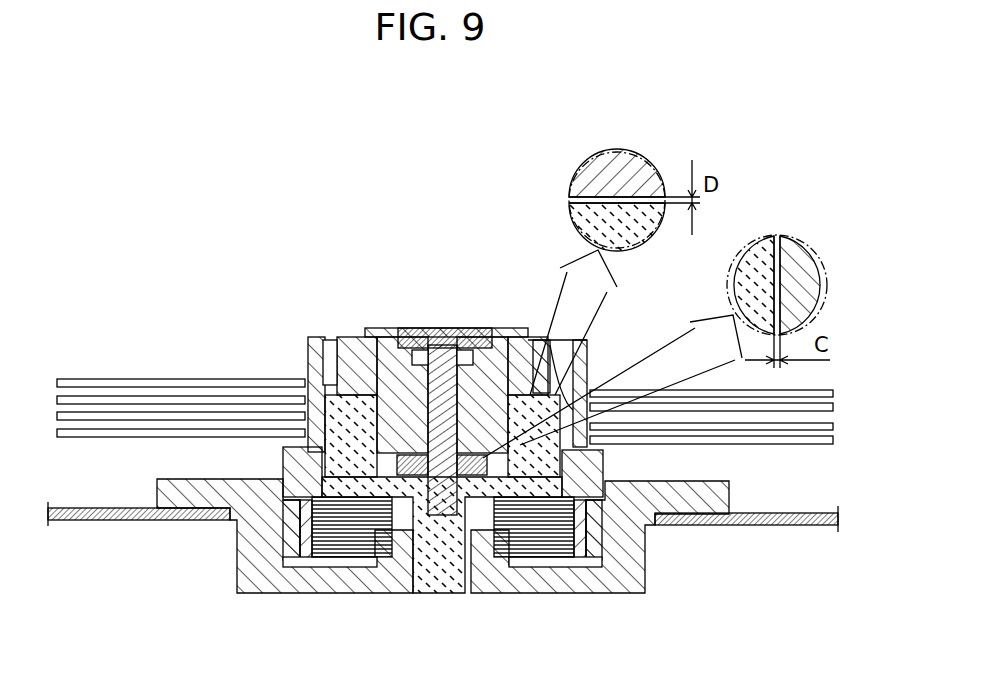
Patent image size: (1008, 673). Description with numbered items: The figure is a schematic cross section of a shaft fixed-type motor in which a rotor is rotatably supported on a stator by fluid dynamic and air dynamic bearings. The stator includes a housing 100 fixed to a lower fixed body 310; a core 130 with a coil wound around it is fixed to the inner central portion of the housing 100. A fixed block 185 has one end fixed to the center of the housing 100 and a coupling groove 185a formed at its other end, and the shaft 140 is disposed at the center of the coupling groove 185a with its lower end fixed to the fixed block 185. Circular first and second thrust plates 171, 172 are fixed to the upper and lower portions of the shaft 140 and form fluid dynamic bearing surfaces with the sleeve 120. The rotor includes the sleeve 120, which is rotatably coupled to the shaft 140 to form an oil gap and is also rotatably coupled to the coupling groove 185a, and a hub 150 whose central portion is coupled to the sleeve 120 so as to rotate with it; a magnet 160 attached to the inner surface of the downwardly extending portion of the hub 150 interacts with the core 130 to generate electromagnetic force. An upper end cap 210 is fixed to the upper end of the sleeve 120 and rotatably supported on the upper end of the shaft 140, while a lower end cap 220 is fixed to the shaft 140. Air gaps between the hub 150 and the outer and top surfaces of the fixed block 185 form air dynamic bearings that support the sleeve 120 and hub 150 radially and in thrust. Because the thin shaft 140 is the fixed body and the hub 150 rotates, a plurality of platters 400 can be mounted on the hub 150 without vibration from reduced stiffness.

The housing 100 is at (612, 594).
The lower fixed body 310 is at (760, 526).
The magnet 160 is at (300, 556).
The core 130 is at (353, 543).
The lower end cap 220 is at (560, 467).
The upper end cap 210 is at (420, 330).
The sleeve 120 is at (375, 330).
The shaft 140 is at (452, 328).
The first thrust plate 171 is at (483, 330).
The second thrust plate 172 is at (590, 385).
The hub 150 is at (318, 352).
The fixed block 185 is at (305, 378).
The coupling groove 185a is at (290, 466).
The platters 400 is at (80, 378).